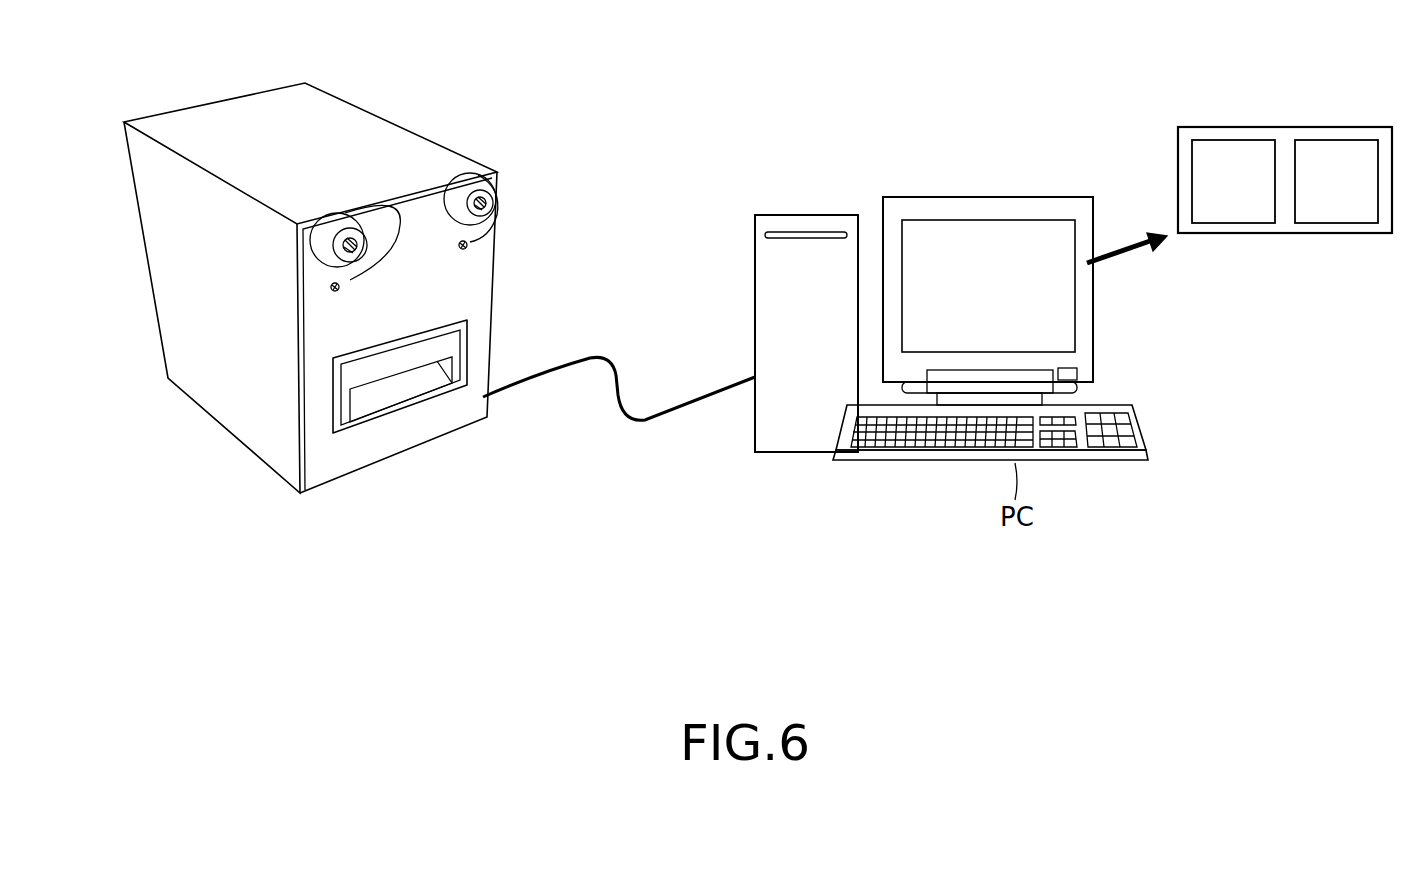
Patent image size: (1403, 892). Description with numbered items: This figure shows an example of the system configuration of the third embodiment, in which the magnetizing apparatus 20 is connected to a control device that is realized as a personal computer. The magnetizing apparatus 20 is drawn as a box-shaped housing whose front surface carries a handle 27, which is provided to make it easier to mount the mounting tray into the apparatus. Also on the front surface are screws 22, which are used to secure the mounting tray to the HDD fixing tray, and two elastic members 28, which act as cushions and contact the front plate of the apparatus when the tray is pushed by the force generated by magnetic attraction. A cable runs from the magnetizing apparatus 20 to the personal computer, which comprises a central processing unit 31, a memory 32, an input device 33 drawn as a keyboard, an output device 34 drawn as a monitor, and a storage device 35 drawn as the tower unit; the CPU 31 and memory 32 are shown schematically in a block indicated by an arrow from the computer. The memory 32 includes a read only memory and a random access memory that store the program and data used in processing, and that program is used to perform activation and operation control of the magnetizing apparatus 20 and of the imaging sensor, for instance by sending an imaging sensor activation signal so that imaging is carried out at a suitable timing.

The magnetizing apparatus 20 is at (367, 112).
The screws 22 is at (352, 243).
The handle 27 is at (417, 403).
The elastic members 28 is at (330, 250).
The central processing unit 31 is at (1232, 148).
The memory 32 is at (1337, 148).
The input device 33 is at (1147, 430).
The output device 34 is at (985, 195).
The storage device 35 is at (803, 213).